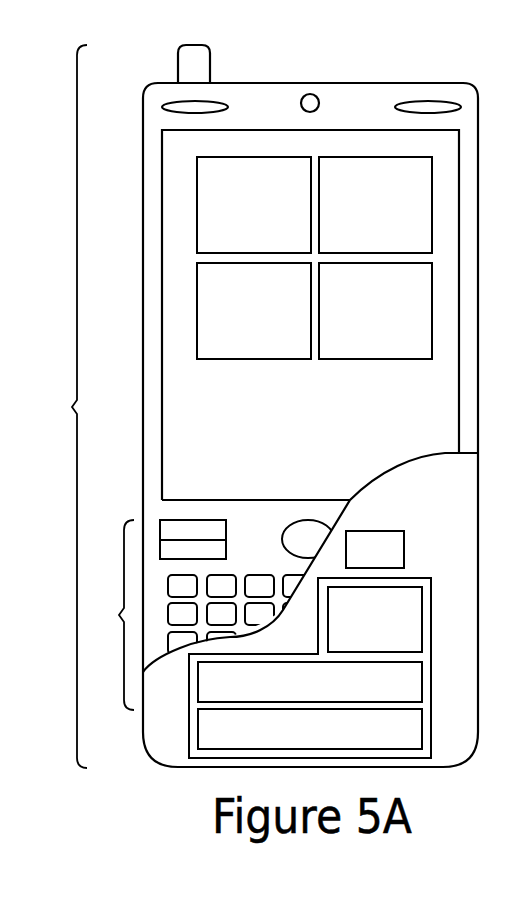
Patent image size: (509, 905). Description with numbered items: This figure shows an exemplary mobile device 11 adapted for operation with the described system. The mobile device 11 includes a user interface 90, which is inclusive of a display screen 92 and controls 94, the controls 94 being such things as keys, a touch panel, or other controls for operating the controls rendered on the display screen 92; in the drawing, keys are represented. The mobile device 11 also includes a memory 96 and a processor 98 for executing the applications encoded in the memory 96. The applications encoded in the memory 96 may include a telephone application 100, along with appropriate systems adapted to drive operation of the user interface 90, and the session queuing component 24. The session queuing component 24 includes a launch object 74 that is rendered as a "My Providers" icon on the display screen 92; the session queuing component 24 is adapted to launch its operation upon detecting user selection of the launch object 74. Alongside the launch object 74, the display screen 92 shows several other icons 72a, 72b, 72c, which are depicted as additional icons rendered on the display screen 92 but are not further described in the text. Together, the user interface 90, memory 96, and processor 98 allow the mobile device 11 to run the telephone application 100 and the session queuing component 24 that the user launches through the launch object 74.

The mobile device 11 is at (367, 53).
The user interface 90 is at (64, 406).
The display screen 92 is at (161, 192).
The controls 94 is at (211, 615).
The memory 96 is at (431, 578).
The processor 98 is at (389, 562).
The telephone application 100 is at (417, 694).
The session queuing component 24 is at (360, 742).
The other icon 72a is at (273, 247).
The other icon 72b is at (394, 247).
The other icon 72c is at (273, 352).
The launch object 74 is at (415, 352).